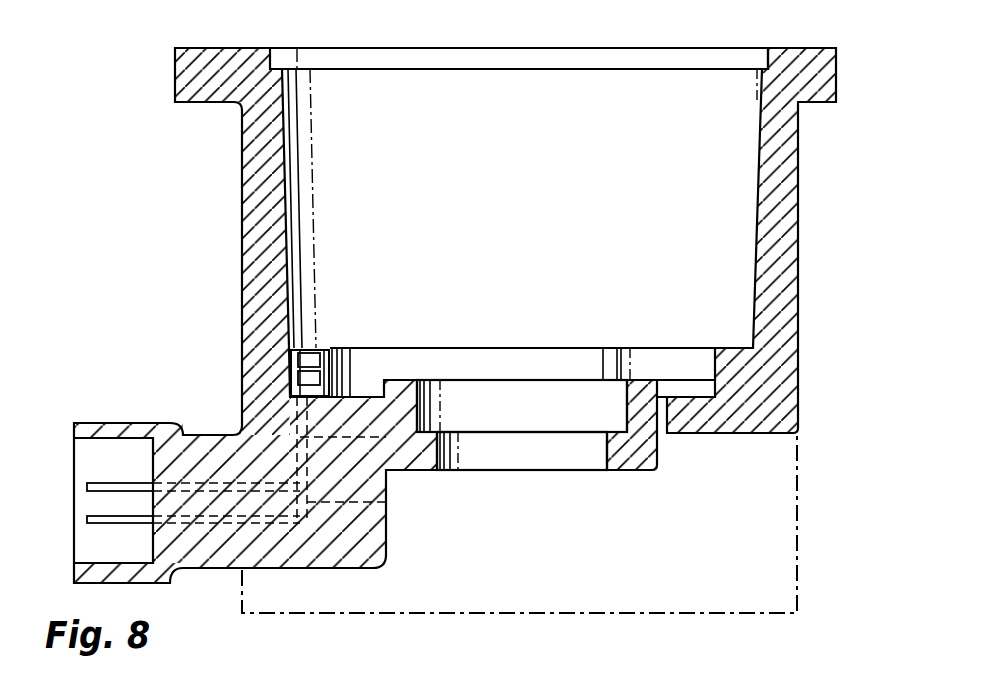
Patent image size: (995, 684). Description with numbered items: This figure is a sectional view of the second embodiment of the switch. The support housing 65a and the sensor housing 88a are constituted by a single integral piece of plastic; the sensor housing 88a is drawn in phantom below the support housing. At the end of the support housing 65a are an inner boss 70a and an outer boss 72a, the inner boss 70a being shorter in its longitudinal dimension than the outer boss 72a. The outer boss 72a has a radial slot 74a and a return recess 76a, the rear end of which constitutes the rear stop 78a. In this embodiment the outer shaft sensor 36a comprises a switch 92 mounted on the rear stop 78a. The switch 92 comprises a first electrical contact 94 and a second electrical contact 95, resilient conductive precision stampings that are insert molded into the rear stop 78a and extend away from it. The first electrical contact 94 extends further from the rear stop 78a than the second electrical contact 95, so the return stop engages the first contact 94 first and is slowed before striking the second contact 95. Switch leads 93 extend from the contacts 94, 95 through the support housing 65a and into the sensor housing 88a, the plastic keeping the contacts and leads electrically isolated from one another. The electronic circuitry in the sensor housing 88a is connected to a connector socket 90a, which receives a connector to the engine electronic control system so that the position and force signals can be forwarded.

The support housing 65a is at (240, 184).
The outer shaft sensor 36a is at (267, 332).
The switch 92 is at (289, 368).
The first electrical contact 94 is at (307, 363).
The second electrical contact 95 is at (293, 385).
The rear stop 78a is at (357, 350).
The radial slot 74a is at (612, 352).
The inner boss 70a is at (642, 379).
The outer boss 72a is at (733, 348).
The return recess 76a is at (690, 396).
The sensor housing 88a is at (799, 520).
The connector socket 90a is at (87, 421).
The switch leads 93 is at (387, 502).